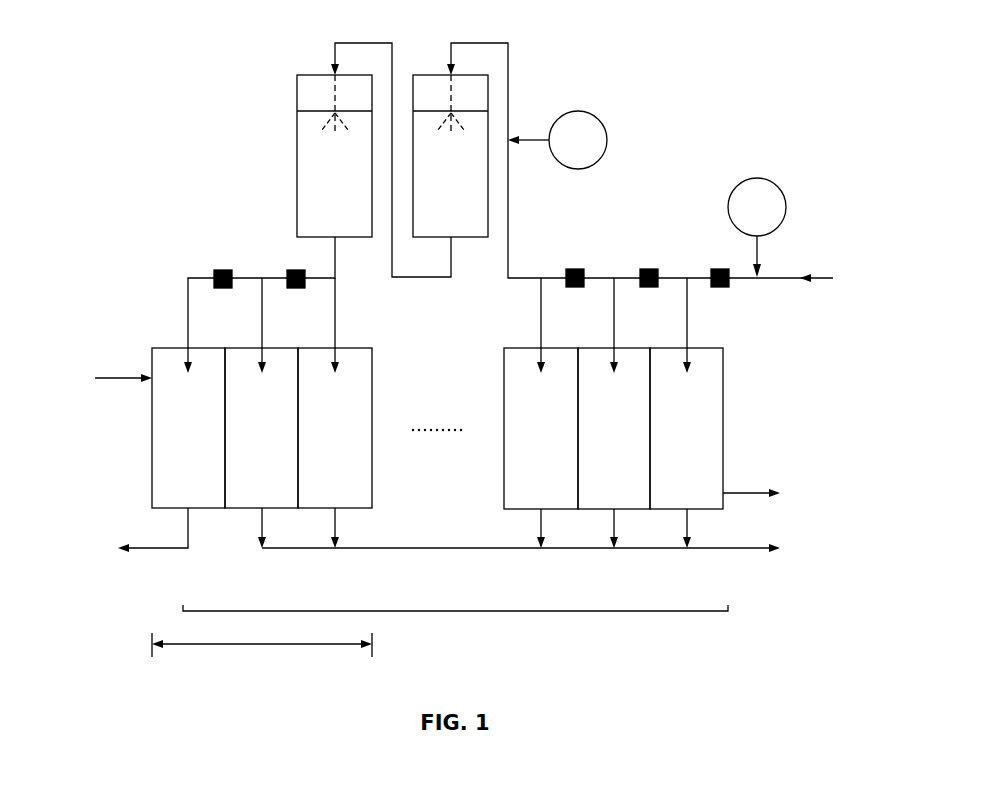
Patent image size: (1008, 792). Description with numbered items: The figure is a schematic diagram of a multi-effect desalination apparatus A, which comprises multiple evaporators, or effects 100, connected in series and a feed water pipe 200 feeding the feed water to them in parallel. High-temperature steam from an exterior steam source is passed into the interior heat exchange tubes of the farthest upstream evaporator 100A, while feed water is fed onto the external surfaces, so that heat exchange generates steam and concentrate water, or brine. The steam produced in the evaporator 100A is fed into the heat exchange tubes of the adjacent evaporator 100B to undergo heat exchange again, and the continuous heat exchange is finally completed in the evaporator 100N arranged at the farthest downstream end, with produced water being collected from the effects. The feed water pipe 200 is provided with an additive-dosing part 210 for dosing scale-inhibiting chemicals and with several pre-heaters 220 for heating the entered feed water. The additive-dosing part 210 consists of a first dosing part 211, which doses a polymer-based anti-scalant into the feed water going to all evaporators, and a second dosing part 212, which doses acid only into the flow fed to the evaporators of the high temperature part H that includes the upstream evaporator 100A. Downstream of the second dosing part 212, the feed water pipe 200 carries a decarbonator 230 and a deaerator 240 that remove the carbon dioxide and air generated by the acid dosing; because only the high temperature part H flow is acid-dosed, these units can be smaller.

The effect 100 is at (447, 510).
The farthest upstream effect 100A is at (200, 502).
The adjacent effect 100B is at (277, 502).
The farthest downstream effect 100N is at (702, 503).
The feed water pipe 200 is at (604, 270).
The additive-dosing part 210 is at (647, 146).
The first dosing part 211 is at (744, 217).
The second dosing part 212 is at (565, 150).
The pre-heater 220 is at (221, 265).
The decarbonator 230 is at (427, 73).
The deaerator 240 is at (308, 73).
The multi-effect desalination apparatus A is at (181, 41).
The high temperature part H is at (262, 650).